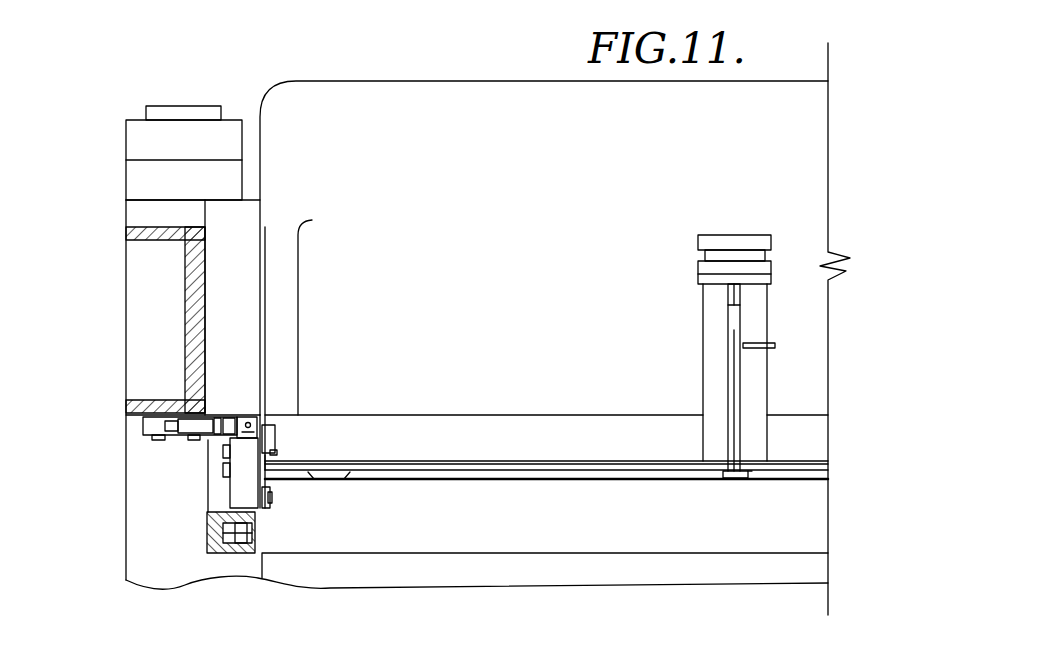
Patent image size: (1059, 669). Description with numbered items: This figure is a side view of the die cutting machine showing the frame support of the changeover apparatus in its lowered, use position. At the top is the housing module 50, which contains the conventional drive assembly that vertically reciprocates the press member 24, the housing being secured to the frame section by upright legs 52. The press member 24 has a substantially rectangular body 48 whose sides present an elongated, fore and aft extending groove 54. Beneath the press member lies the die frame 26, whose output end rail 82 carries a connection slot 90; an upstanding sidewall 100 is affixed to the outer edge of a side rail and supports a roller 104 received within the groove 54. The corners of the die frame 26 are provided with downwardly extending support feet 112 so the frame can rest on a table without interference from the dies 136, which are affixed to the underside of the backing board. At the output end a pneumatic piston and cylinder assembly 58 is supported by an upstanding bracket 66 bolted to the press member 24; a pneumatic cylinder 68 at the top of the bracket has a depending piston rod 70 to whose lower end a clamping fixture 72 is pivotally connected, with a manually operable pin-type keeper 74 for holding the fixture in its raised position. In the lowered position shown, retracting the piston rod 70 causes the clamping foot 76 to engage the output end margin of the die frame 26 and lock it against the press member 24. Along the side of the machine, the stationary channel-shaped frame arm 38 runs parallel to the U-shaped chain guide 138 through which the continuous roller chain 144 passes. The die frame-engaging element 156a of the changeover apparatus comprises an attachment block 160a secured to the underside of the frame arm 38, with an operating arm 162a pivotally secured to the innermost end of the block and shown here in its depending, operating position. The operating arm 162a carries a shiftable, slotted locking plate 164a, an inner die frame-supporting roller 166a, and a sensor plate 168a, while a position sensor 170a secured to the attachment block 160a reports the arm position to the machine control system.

The housing module 50 is at (544, 248).
The upright legs 52 is at (234, 242).
The channel-shaped frame arm 38 is at (185, 313).
The press member 24 is at (455, 415).
The rectangular body 48 is at (546, 442).
The die frame 26 is at (545, 480).
The groove 54 is at (277, 452).
The pneumatic piston and cylinder assembly 58 is at (737, 235).
The upstanding bracket 66 is at (705, 325).
The pneumatic cylinder 68 is at (700, 243).
The piston rod 70 is at (741, 292).
The clamping fixture 72 is at (735, 390).
The pin-type keeper 74 is at (774, 345).
The clamping foot 76 is at (735, 479).
The output end rail 82 is at (603, 470).
The connection slot 90 is at (752, 479).
The upstanding sidewall 100 is at (270, 472).
The roller 104 is at (277, 443).
The support foot 112 is at (345, 480).
The dies 136 is at (630, 480).
The chain guide 138 is at (217, 556).
The roller chain 144 is at (247, 553).
The die frame-engaging element 156a is at (145, 440).
The attachment block 160a is at (143, 425).
The operating arm 162a is at (207, 512).
The locking plate 164a is at (232, 488).
The die frame-supporting roller 166a is at (270, 508).
The sensor plate 168a is at (248, 417).
The position sensor 170a is at (184, 437).